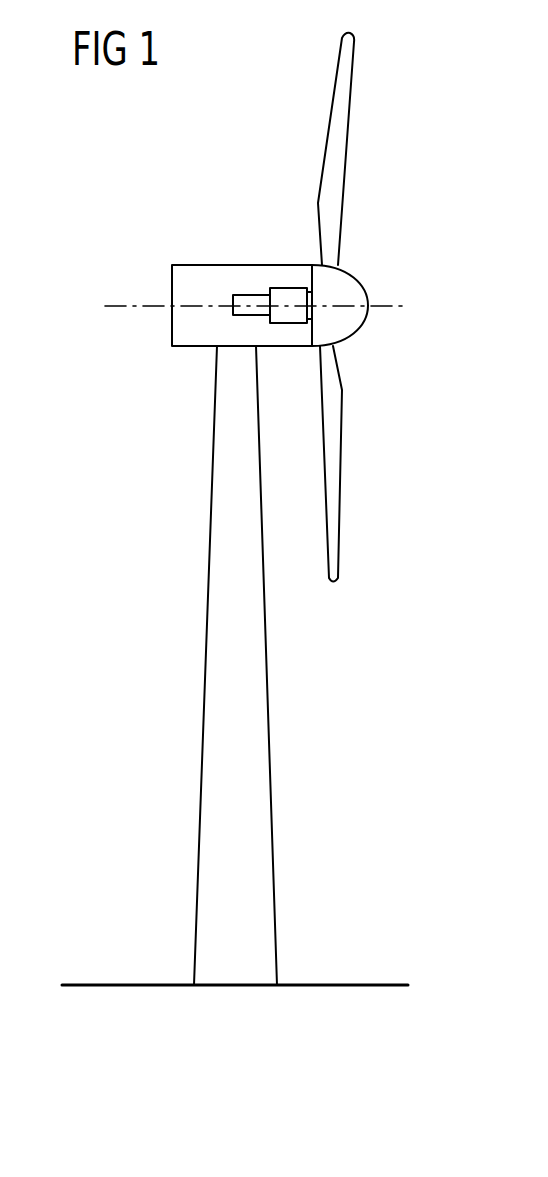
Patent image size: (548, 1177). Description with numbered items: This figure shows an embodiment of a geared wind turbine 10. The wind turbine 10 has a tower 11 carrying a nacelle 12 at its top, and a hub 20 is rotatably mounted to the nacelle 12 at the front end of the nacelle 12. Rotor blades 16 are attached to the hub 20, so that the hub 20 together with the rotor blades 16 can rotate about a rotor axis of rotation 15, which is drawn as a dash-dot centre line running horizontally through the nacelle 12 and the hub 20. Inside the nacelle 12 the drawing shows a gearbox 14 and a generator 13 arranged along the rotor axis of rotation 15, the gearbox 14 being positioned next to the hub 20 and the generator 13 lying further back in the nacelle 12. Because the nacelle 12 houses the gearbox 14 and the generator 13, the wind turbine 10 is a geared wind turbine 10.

The wind turbine 10 is at (140, 483).
The tower 11 is at (257, 719).
The nacelle 12 is at (217, 264).
The generator 13 is at (258, 300).
The gearbox 14 is at (287, 316).
The rotor axis of rotation 15 is at (120, 306).
The rotor blades 16 is at (335, 145).
The hub 20 is at (369, 284).